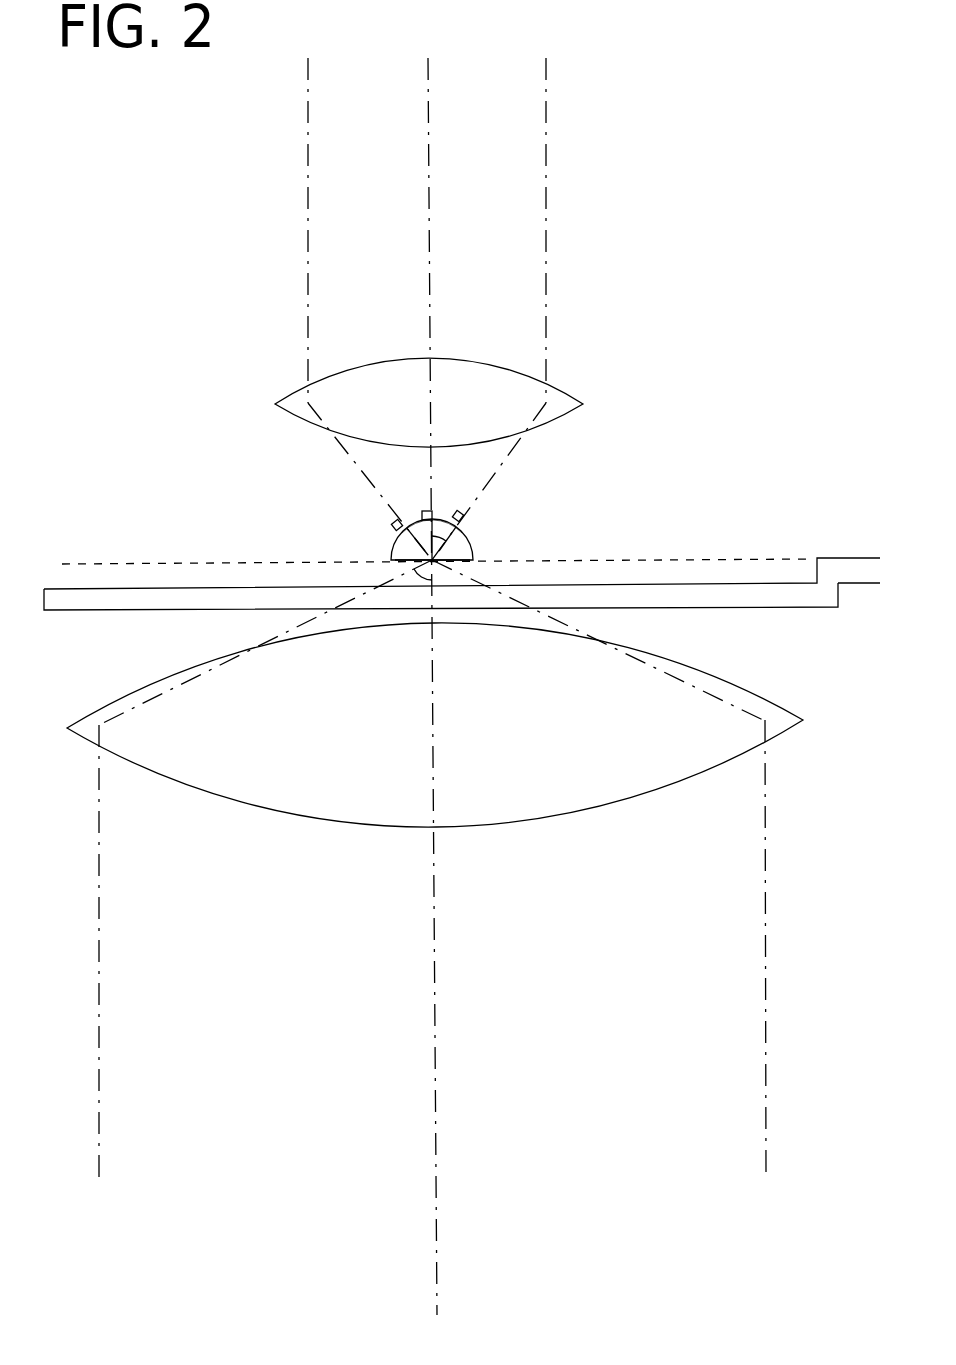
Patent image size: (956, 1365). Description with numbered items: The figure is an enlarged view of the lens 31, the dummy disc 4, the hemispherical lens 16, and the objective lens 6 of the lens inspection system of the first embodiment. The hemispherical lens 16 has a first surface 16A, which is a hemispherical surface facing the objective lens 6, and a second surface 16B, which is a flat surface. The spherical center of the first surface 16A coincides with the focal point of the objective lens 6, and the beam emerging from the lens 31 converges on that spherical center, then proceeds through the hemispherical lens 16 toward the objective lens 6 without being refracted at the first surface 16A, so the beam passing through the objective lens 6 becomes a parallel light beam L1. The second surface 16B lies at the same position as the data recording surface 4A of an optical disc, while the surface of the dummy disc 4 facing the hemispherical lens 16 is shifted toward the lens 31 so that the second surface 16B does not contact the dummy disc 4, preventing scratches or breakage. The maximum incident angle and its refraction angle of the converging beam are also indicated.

The objective lens 6 is at (565, 402).
The hemispherical lens 16 is at (470, 552).
The first surface 16A is at (467, 535).
The second surface 16B is at (400, 566).
The dummy disc 4 is at (88, 598).
The recording surface of disk 4A is at (150, 563).
The objective lens (lens) 31 is at (645, 650).
The light beam L1 is at (765, 983).